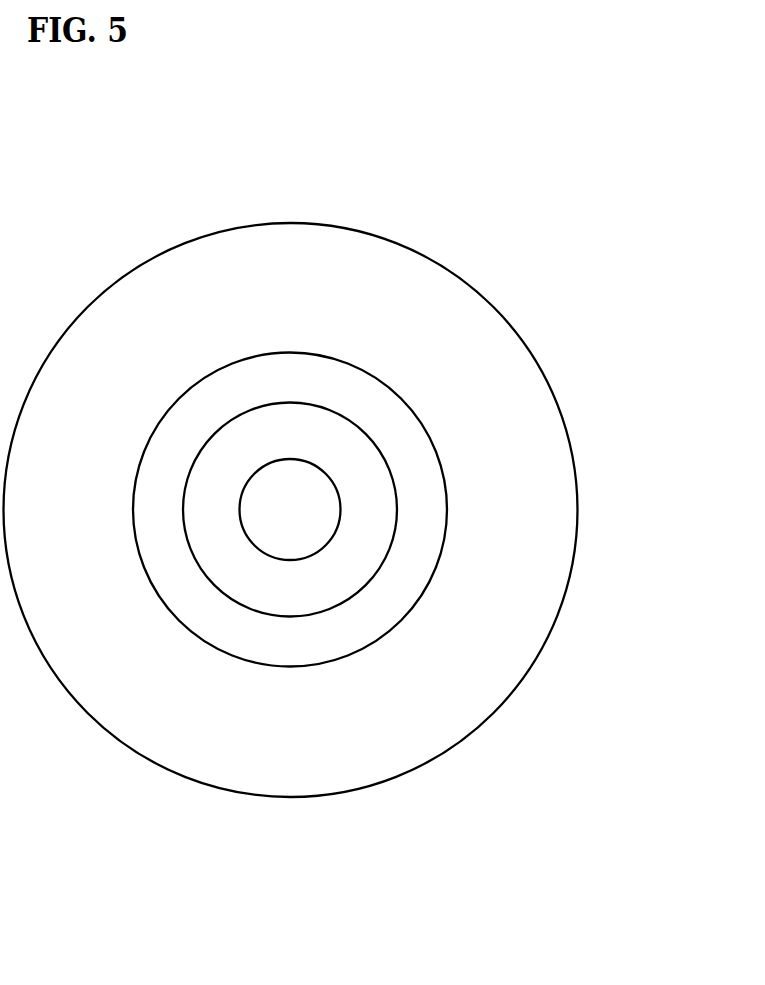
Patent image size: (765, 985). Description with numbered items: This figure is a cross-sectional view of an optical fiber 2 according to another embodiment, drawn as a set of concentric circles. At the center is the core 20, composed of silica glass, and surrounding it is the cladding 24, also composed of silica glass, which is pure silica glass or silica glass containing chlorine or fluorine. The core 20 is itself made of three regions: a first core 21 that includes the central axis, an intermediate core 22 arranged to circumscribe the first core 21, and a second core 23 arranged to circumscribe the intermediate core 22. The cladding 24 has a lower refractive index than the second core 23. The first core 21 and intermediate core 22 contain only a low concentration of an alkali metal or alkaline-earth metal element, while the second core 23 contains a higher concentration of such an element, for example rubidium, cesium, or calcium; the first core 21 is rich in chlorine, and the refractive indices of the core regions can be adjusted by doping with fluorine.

The optical fiber 2 is at (420, 193).
The core 20 is at (643, 403).
The first core 21 is at (297, 477).
The intermediate core 22 is at (362, 490).
The second core 23 is at (424, 525).
The cladding 24 is at (548, 612).